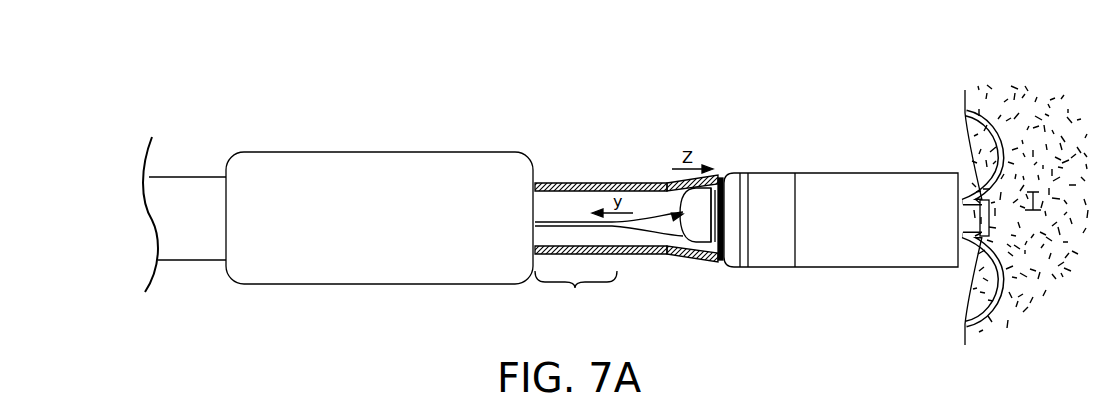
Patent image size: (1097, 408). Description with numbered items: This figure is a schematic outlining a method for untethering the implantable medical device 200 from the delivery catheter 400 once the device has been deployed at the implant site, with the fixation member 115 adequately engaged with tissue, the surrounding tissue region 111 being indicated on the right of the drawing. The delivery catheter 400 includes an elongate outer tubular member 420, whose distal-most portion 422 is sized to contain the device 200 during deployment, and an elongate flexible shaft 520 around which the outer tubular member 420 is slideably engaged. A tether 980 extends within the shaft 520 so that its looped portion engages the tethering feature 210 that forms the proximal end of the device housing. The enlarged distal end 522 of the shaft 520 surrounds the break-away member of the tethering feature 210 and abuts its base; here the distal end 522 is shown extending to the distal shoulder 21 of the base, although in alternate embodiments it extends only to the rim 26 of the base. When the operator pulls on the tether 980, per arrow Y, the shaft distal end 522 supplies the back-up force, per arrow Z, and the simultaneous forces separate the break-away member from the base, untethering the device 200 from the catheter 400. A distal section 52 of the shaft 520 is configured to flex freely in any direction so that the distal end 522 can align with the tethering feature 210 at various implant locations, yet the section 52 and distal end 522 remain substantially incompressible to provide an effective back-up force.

The delivery catheter 400 is at (379, 163).
The elongate outer tubular member 420 is at (195, 132).
The distal-most portion of outer tubular member 422 is at (388, 224).
The elongate flexible shaft 520 is at (628, 188).
The distal end of shaft 522 is at (656, 182).
The tether 980 is at (568, 200).
The distal section of catheter shaft 52 is at (576, 290).
The rim 26 is at (712, 224).
The distal shoulder 21 is at (725, 177).
The implantable medical device 200 is at (838, 197).
The tethering feature 210 is at (736, 232).
The fixation member 115 is at (1016, 140).
The tissue 111 is at (989, 223).